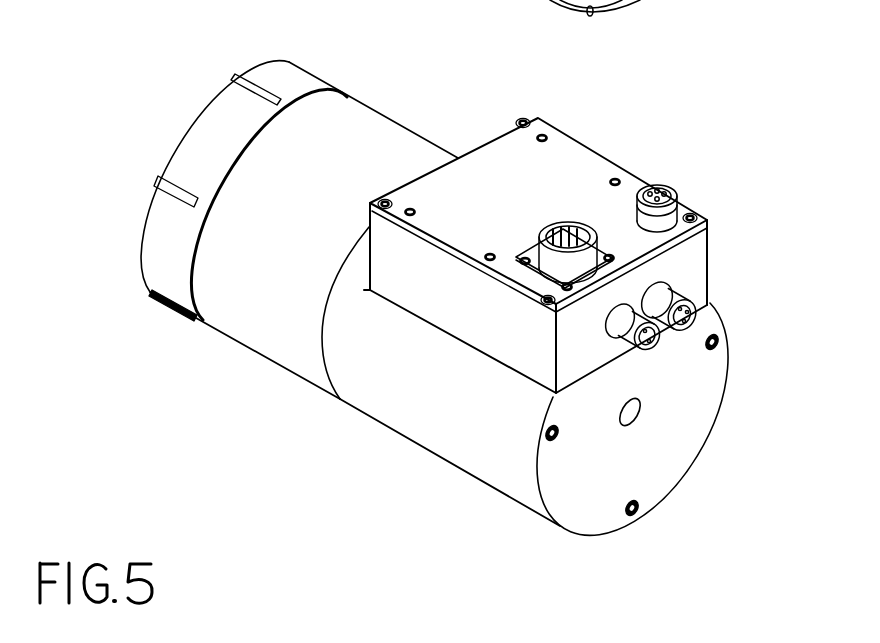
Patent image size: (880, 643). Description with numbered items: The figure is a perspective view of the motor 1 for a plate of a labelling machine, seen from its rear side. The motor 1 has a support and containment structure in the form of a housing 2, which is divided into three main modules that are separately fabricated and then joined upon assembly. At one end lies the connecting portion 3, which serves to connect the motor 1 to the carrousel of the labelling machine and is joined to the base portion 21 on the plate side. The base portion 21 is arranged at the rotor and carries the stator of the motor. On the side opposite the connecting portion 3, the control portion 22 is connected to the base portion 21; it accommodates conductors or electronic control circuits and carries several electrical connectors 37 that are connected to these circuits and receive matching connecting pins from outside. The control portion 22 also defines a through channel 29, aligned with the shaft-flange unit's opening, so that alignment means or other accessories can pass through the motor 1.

The motor 1 is at (467, 271).
The housing 2 is at (357, 375).
The connecting portion 3 is at (264, 83).
The base portion 21 is at (380, 134).
The control portion 22 is at (562, 419).
The through channel 29 is at (631, 416).
The electrical connector 37 is at (567, 226).